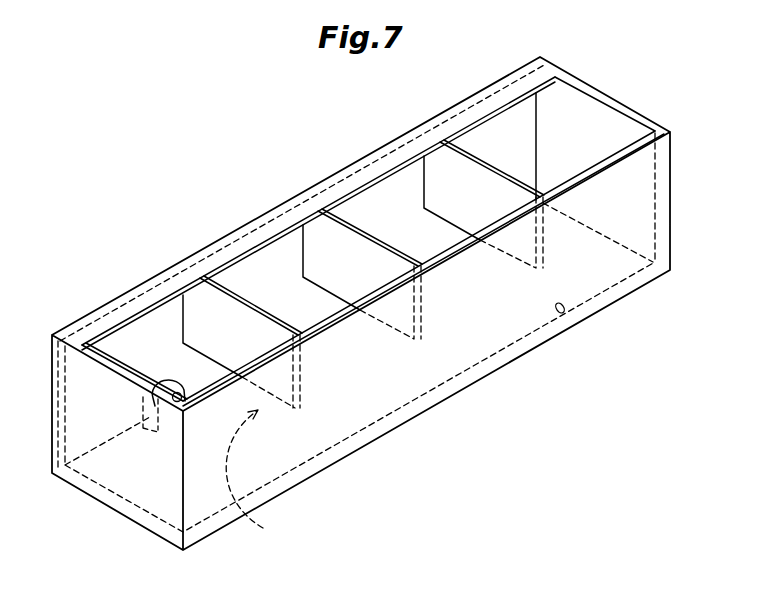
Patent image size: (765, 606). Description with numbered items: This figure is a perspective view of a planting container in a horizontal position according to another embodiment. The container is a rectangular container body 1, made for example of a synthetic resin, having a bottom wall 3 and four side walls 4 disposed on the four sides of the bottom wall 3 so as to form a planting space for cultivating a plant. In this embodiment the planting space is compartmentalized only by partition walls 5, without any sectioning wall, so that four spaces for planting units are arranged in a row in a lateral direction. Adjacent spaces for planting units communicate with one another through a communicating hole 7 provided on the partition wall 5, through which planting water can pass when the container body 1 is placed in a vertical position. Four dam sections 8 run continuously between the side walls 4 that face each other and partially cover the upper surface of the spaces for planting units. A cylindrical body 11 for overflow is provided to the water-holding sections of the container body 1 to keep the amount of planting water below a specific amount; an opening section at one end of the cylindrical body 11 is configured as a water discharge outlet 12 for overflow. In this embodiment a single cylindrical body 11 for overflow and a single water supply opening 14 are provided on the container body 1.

The container body 1 is at (196, 182).
The bottom wall 3 is at (333, 465).
The side wall 4 is at (112, 465).
The partition wall 5 is at (335, 268).
The communicating hole 7 is at (254, 478).
The dam section 8 is at (352, 183).
The cylindrical body for overflow 11 is at (163, 387).
The water discharge outlet for overflow 12 is at (181, 400).
The water supply opening 14 is at (565, 312).